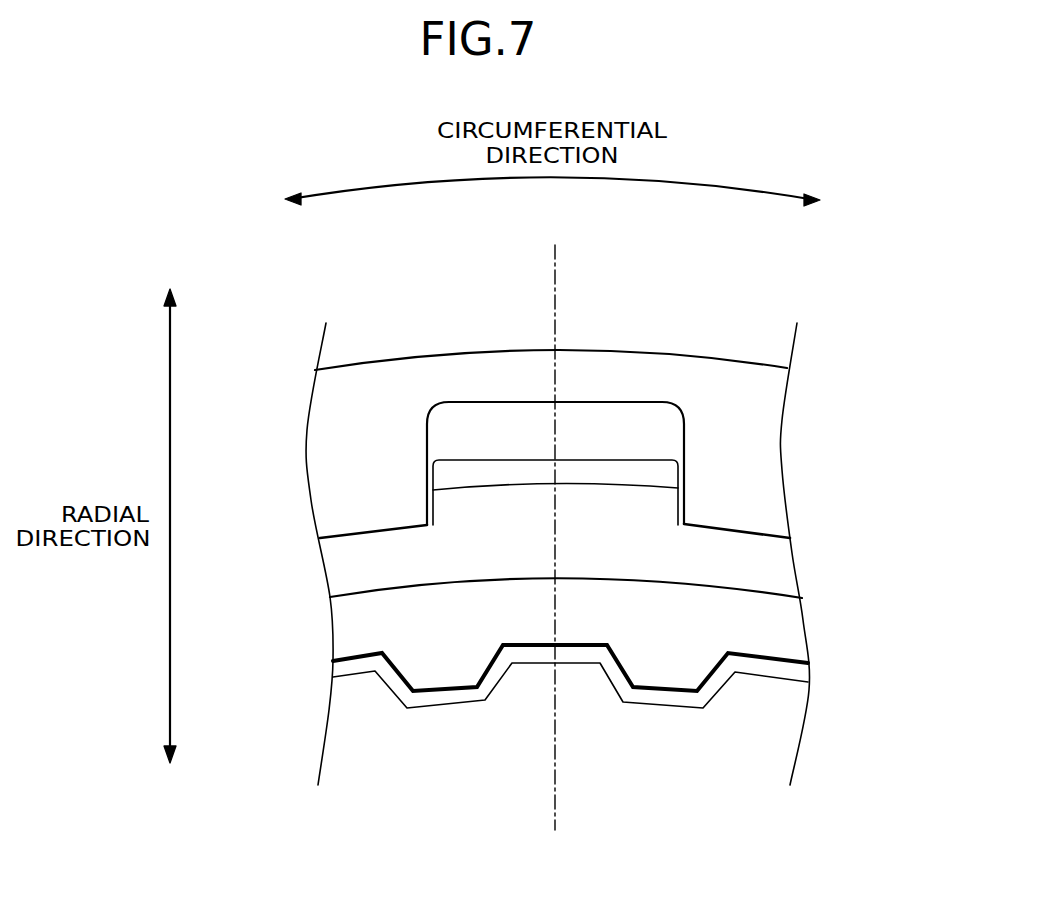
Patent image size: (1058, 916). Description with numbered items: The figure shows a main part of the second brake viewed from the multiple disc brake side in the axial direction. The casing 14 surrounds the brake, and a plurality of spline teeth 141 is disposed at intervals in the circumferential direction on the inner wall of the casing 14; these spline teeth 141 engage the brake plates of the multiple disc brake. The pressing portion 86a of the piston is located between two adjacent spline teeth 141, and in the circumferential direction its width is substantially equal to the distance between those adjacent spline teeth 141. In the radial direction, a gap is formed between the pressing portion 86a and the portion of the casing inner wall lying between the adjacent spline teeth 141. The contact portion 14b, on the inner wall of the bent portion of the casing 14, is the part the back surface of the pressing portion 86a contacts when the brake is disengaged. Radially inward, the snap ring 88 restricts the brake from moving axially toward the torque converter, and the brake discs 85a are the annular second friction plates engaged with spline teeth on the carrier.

The casing 14 is at (707, 358).
The contact portion 14b is at (607, 436).
The pressing portion 86a is at (515, 472).
The spline teeth 141 is at (333, 455).
The snap ring 88 is at (748, 560).
The brake discs 85a is at (780, 625).